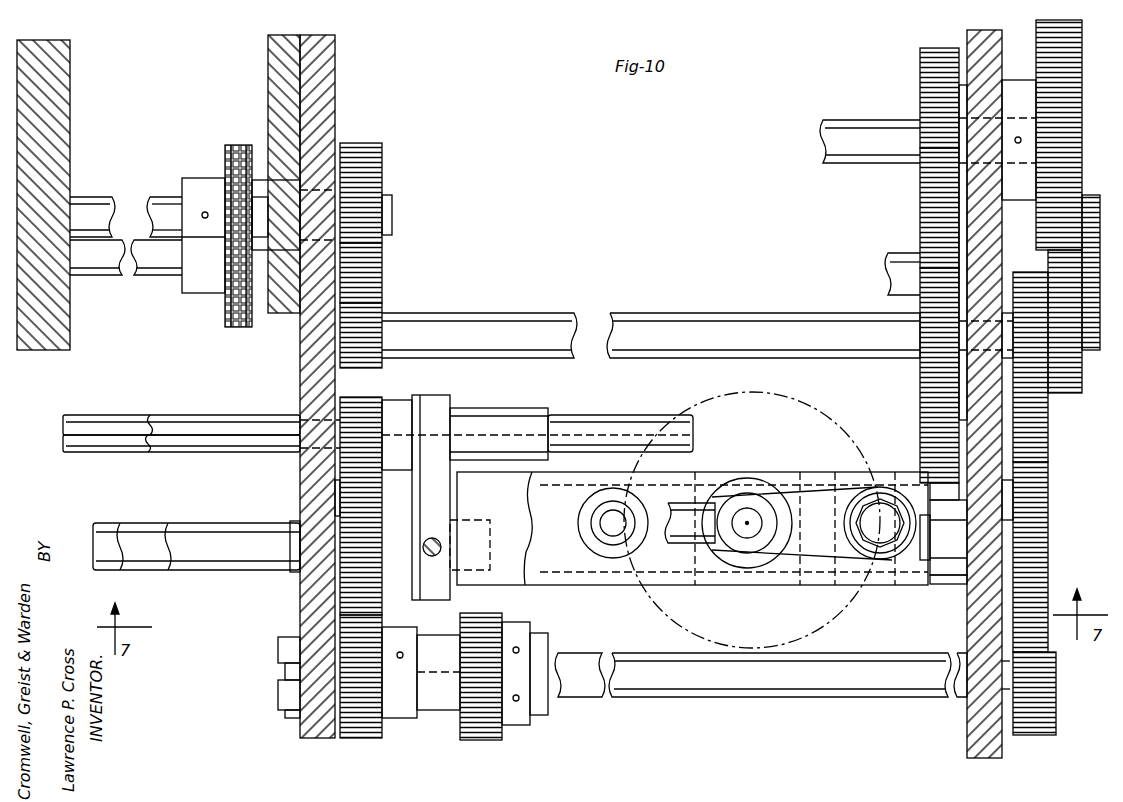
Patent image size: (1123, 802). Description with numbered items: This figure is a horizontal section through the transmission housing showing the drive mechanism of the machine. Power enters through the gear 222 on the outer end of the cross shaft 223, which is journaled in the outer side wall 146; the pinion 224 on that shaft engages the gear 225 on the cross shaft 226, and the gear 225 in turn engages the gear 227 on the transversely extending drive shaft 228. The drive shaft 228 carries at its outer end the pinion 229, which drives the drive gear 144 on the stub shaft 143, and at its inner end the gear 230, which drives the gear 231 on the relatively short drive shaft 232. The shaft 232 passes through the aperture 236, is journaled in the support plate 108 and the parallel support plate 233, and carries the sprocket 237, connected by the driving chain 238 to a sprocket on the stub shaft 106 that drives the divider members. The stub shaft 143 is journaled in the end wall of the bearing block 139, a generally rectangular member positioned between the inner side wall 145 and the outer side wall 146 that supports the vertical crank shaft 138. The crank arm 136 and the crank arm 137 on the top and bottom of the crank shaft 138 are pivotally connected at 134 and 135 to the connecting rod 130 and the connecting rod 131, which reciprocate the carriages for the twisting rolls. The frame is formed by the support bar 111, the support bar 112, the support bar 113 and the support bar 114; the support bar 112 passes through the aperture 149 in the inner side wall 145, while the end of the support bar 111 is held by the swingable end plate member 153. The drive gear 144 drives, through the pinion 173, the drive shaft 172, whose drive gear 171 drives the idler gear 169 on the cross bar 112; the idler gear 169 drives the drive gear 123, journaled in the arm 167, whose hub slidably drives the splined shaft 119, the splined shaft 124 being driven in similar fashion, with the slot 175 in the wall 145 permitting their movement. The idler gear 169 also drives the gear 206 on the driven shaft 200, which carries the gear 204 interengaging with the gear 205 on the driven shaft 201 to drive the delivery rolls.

The support plate 108 is at (68, 314).
The parallel support plate 233 is at (270, 124).
The inner side wall 145 is at (284, 314).
The outer side wall 146 is at (967, 745).
The drive shaft 232 is at (160, 198).
The stub shaft 106 is at (124, 277).
The sprocket 237 is at (228, 262).
The driving chain 238 is at (226, 306).
The aperture 236 is at (343, 150).
The gear 231 is at (382, 258).
The gear 230 is at (382, 302).
The drive shaft 228 is at (775, 313).
The drive gear 123 is at (382, 399).
The idler gear 169 is at (335, 497).
The drive gear 171 is at (385, 736).
The splined shaft 124 is at (125, 415).
The splined shaft 119 is at (178, 452).
The support bar 113 is at (148, 523).
The support bar 114 is at (120, 570).
The support bar 112 is at (193, 570).
The aperture 149 is at (292, 571).
The arm 167 is at (440, 491).
The bearing block 139 is at (588, 585).
The crank arm 137 is at (684, 480).
The connecting rod 131 is at (590, 562).
The pivot connection 135 is at (598, 520).
The connecting rod 130 is at (693, 543).
The crank shaft 138 is at (747, 570).
The crank arm 136 is at (812, 496).
The pivot connection 134 is at (858, 565).
The support bar 111 is at (928, 542).
The end plate member 153 is at (940, 589).
The pinion 224 is at (920, 52).
The gear 225 is at (917, 203).
The gear 227 is at (920, 392).
The cross shaft 223 is at (888, 118).
The cross shaft 226 is at (886, 282).
The gear 222 is at (1036, 28).
The pinion 229 is at (1045, 386).
The drive gear 144 is at (1048, 467).
The stub shaft 143 is at (1004, 533).
The pinion 173 is at (1015, 735).
The gear 206 is at (388, 628).
The gear 204 is at (472, 613).
The gear 205 is at (478, 740).
The drive shaft 172 is at (617, 696).
The driven shaft 200 is at (277, 648).
The driven shaft 201 is at (278, 690).
The slot 175 is at (300, 713).